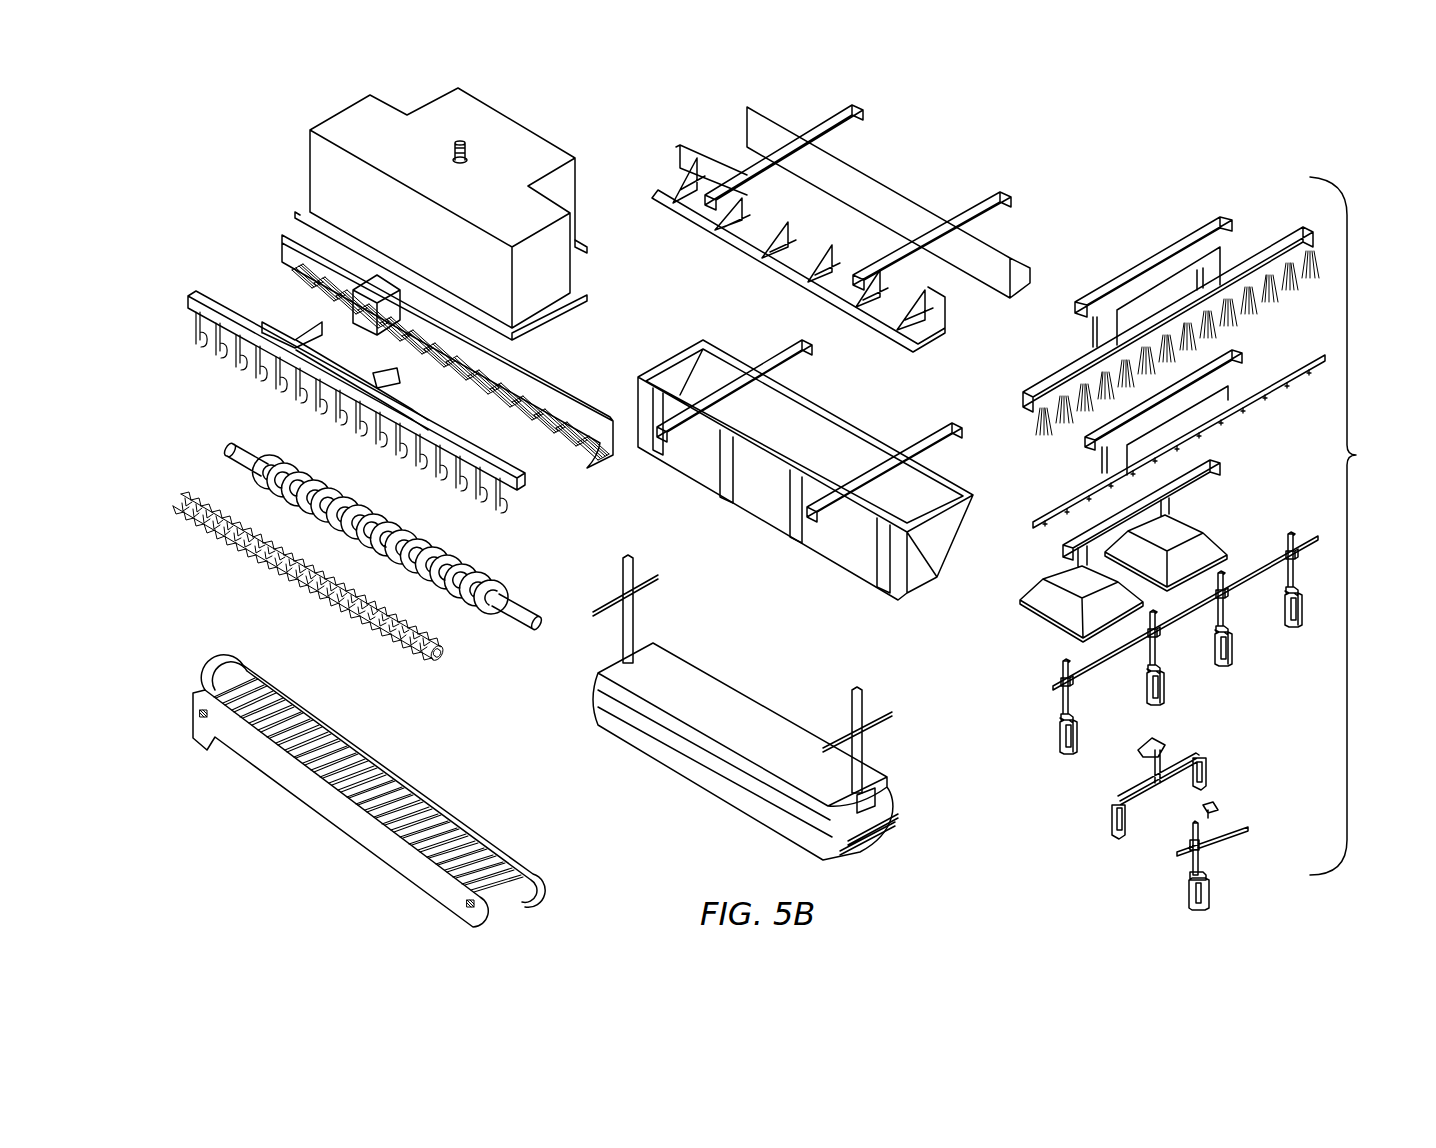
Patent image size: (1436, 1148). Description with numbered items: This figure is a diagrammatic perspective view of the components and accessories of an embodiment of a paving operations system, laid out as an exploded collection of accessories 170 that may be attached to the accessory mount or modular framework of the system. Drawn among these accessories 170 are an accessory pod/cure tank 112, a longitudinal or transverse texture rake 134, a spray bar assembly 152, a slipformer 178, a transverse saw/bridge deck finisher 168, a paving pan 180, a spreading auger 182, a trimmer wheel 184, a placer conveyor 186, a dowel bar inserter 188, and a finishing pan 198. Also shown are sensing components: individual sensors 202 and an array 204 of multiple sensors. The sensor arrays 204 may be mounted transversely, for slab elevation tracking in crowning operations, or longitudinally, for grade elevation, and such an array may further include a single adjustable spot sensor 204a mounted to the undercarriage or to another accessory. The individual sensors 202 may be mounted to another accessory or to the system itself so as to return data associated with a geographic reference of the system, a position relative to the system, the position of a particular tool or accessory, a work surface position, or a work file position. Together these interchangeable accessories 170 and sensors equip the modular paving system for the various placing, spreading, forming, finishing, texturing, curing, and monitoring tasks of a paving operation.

The accessory pod/cure tank 112 is at (367, 136).
The dowel bar inserter 188 is at (242, 285).
The slipformer 178 is at (912, 166).
The texture rake 134 is at (1185, 240).
The paving pan 180 is at (840, 400).
The spray bar assembly 152 is at (1078, 492).
The finishing pan 198 is at (1205, 523).
The accessories 170 is at (1365, 526).
The spreading auger 182 is at (490, 563).
The transverse saw/bridge deck finisher 168 is at (690, 655).
The trimmer wheel 184 is at (348, 642).
The individual sensor 202 is at (1262, 660).
The placer conveyor 186 is at (253, 773).
The sensor array 204 is at (1130, 782).
The adjustable spot sensor 204a is at (1175, 843).